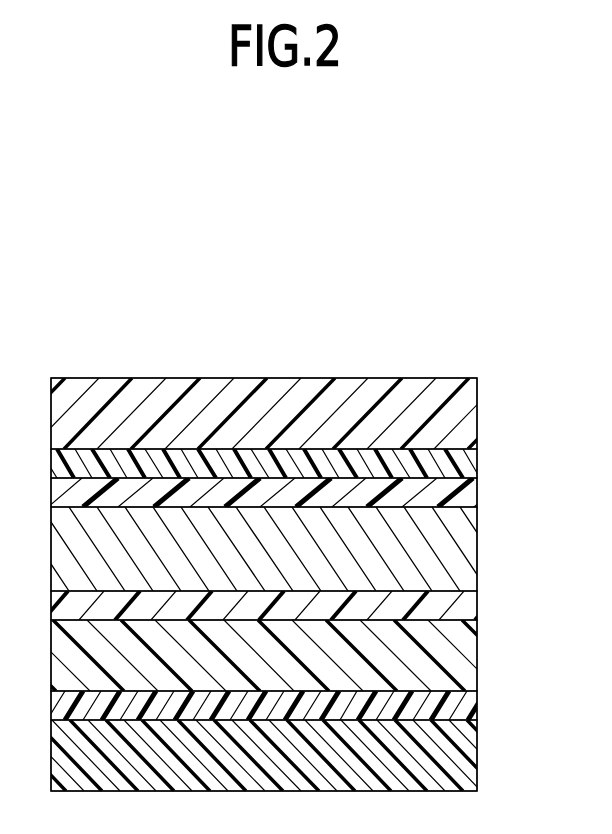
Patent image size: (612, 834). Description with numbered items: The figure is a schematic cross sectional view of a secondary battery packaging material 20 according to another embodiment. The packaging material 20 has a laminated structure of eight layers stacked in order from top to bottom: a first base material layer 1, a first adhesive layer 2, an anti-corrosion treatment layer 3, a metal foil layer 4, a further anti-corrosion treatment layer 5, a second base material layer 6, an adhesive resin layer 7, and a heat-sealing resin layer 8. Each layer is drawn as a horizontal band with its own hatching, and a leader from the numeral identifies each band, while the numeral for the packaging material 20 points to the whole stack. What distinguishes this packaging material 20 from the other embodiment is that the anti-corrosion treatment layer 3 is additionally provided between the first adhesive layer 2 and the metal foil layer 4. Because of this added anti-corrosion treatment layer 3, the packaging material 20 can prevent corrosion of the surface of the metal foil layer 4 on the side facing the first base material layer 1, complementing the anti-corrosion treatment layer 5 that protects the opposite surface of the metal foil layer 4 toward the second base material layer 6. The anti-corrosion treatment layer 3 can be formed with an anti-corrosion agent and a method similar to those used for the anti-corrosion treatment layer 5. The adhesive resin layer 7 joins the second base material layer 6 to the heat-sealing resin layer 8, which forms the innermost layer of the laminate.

The secondary battery packaging material 20 is at (431, 294).
The first base material layer 1 is at (467, 413).
The first adhesive layer 2 is at (467, 465).
The anti-corrosion treatment layer 3 is at (467, 491).
The metal foil layer 4 is at (467, 551).
The anti-corrosion treatment layer 5 is at (467, 601).
The second base material layer 6 is at (467, 655).
The adhesive resin layer 7 is at (467, 705).
The heat-sealing resin layer 8 is at (467, 753).